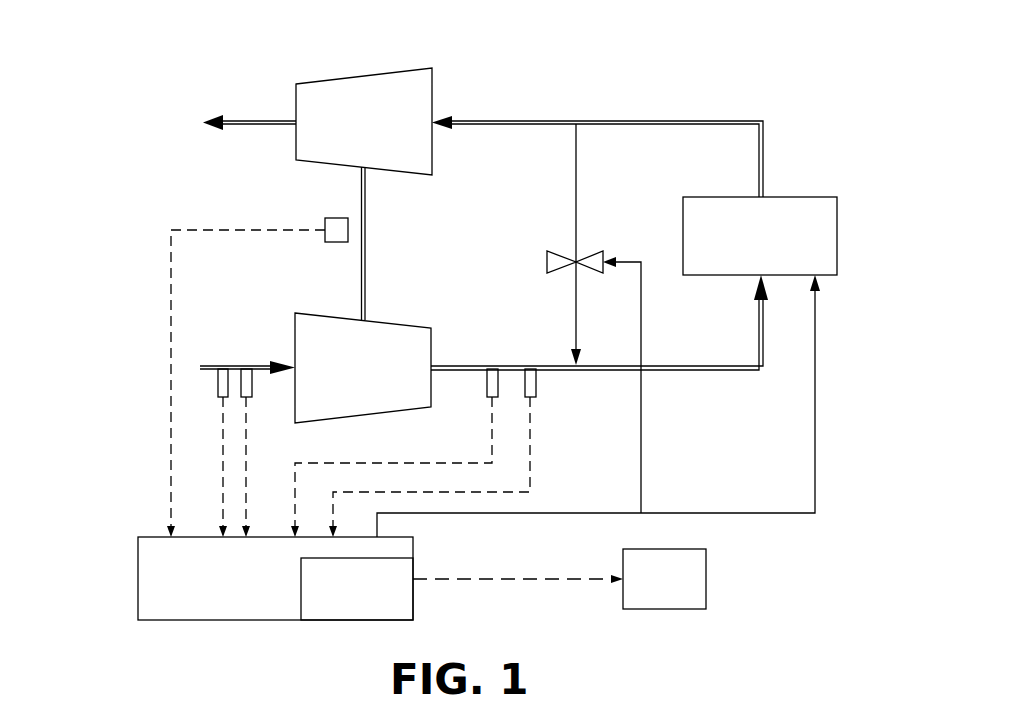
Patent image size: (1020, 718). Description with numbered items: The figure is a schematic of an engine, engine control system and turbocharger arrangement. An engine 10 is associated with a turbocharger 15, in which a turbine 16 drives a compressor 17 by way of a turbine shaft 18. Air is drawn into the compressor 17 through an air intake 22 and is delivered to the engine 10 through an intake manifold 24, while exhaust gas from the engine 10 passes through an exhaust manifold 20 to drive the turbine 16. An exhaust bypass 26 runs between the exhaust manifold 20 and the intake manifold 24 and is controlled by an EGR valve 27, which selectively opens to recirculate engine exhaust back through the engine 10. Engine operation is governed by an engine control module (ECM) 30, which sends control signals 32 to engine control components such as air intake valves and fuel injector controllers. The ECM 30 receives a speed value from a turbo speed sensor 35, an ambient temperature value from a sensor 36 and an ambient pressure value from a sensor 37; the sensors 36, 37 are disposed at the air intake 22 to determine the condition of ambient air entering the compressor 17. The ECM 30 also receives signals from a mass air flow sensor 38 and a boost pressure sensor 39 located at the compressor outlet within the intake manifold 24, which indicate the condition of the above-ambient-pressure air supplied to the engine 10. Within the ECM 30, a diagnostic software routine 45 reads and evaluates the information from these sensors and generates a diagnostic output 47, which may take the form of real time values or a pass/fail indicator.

The engine 10 is at (786, 197).
The turbocharger 15 is at (321, 56).
The turbine 16 is at (386, 68).
The compressor 17 is at (395, 323).
The turbine shaft 18 is at (367, 218).
The exhaust manifold 20 is at (640, 121).
The air intake 22 is at (238, 365).
The intake manifold 24 is at (690, 371).
The exhaust bypass 26 is at (576, 178).
The EGR valve 27 is at (595, 250).
The engine control module (ECM) 30 is at (138, 578).
The control signals 32 is at (520, 513).
The turbo speed sensor 35 is at (330, 243).
The ambient temperature sensor 36 is at (222, 398).
The ambient pressure sensor 37 is at (247, 398).
The mass air flow sensor 38 is at (492, 398).
The boost pressure sensor 39 is at (532, 398).
The diagnostic software routine 45 is at (413, 595).
The diagnostic output 47 is at (706, 580).